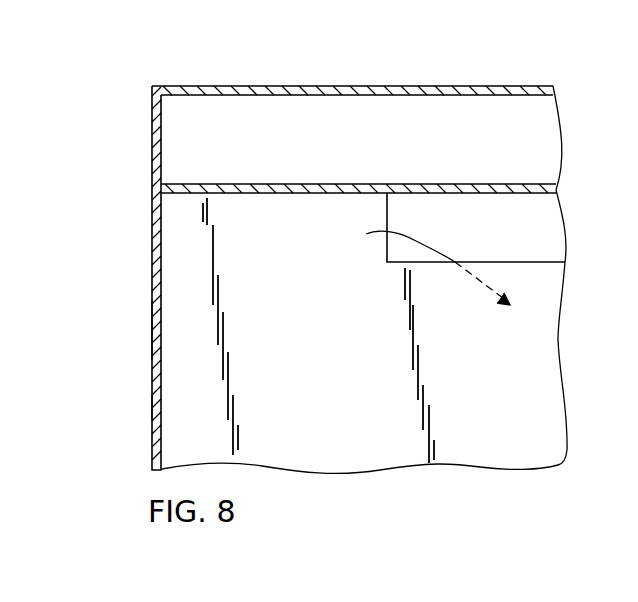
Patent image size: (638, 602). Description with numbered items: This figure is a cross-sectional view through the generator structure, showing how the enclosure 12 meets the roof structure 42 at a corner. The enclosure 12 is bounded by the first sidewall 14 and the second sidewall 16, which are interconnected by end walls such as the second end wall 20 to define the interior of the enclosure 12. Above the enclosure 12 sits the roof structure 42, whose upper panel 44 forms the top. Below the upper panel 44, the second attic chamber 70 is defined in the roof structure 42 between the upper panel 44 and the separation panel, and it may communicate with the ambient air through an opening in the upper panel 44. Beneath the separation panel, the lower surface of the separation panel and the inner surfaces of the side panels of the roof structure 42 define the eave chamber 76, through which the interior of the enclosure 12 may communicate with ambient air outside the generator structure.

The roof structure 42 is at (152, 85).
The upper panel 44 is at (236, 89).
The second attic chamber 70 is at (335, 147).
The second sidewall 16 is at (205, 191).
The eave chamber 76 is at (487, 242).
The first sidewall 14 is at (305, 324).
The second end wall 20 is at (152, 253).
The enclosure 12 is at (150, 408).